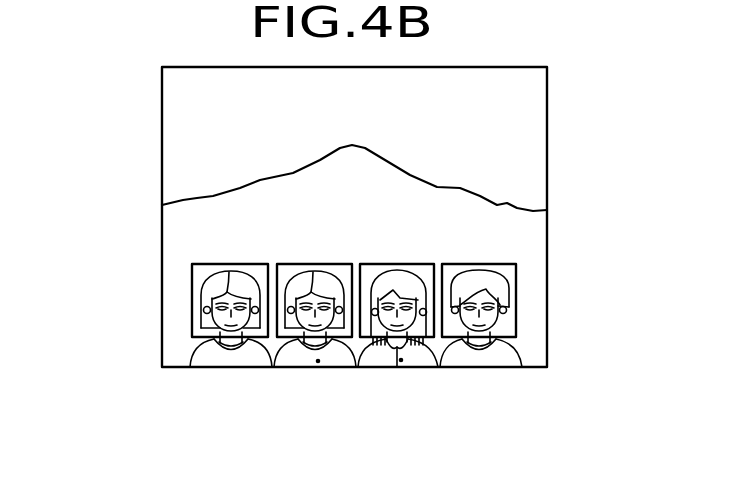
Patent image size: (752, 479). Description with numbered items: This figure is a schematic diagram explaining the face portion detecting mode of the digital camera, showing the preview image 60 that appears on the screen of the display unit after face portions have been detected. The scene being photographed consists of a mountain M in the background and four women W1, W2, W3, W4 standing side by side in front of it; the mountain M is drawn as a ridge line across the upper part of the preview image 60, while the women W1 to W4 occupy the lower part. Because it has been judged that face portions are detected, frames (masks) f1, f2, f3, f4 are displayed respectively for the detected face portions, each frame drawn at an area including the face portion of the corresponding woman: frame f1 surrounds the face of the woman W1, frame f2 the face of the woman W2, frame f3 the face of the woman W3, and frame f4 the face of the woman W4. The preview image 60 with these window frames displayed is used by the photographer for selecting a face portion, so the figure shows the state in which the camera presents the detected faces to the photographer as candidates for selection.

The preview image 60 is at (547, 117).
The mountain M is at (258, 178).
The frame (mask) f1 is at (205, 265).
The frame (mask) f2 is at (287, 263).
The frame (mask) f3 is at (427, 263).
The frame (mask) f4 is at (507, 263).
The woman W1 is at (226, 360).
The woman W2 is at (306, 360).
The woman W3 is at (391, 360).
The woman W4 is at (473, 360).